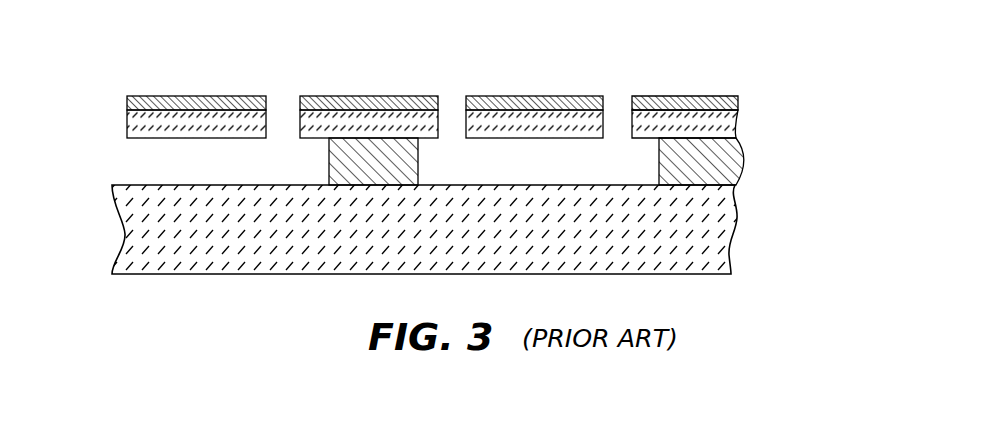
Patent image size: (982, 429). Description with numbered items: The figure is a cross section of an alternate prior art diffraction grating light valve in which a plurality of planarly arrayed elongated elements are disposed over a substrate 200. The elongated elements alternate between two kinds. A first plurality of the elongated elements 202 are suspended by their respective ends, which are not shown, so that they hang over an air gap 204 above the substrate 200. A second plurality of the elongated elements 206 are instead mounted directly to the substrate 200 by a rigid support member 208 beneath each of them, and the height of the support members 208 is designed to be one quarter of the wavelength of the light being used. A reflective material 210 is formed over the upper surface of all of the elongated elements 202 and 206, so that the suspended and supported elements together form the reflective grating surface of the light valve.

The substrate 200 is at (735, 230).
The first plurality of elongated elements 202 is at (127, 127).
The air gap 204 is at (143, 175).
The second plurality of elongated elements 206 is at (440, 120).
The rigid support member 208 is at (419, 178).
The reflective material 210 is at (186, 96).